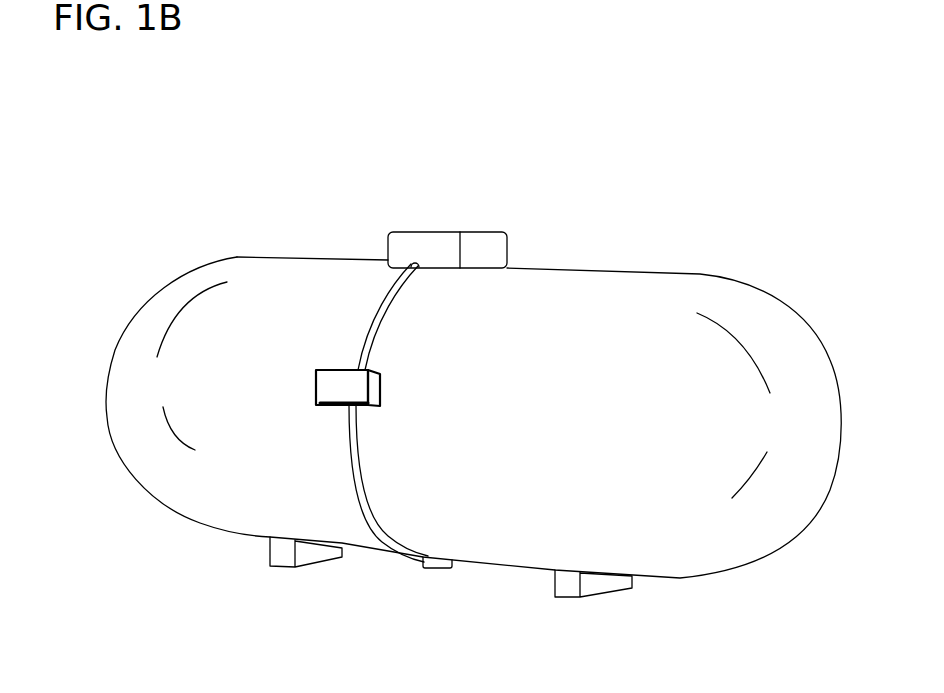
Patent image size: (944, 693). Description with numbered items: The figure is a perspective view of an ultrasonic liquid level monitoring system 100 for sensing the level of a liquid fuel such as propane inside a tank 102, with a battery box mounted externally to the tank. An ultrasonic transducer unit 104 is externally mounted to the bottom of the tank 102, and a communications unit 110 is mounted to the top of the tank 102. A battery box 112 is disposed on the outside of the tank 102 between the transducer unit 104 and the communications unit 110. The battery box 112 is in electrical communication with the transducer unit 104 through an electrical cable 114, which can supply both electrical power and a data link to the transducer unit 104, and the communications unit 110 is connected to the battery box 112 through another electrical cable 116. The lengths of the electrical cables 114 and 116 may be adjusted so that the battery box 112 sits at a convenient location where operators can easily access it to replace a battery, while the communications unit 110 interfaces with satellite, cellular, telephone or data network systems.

The ultrasonic liquid level monitoring system 100 is at (237, 147).
The tank 102 is at (592, 411).
The ultrasonic transducer unit 104 is at (433, 573).
The communications unit 110 is at (438, 232).
The battery box 112 is at (372, 370).
The electrical cable 114 is at (375, 537).
The electrical cable 116 is at (378, 295).